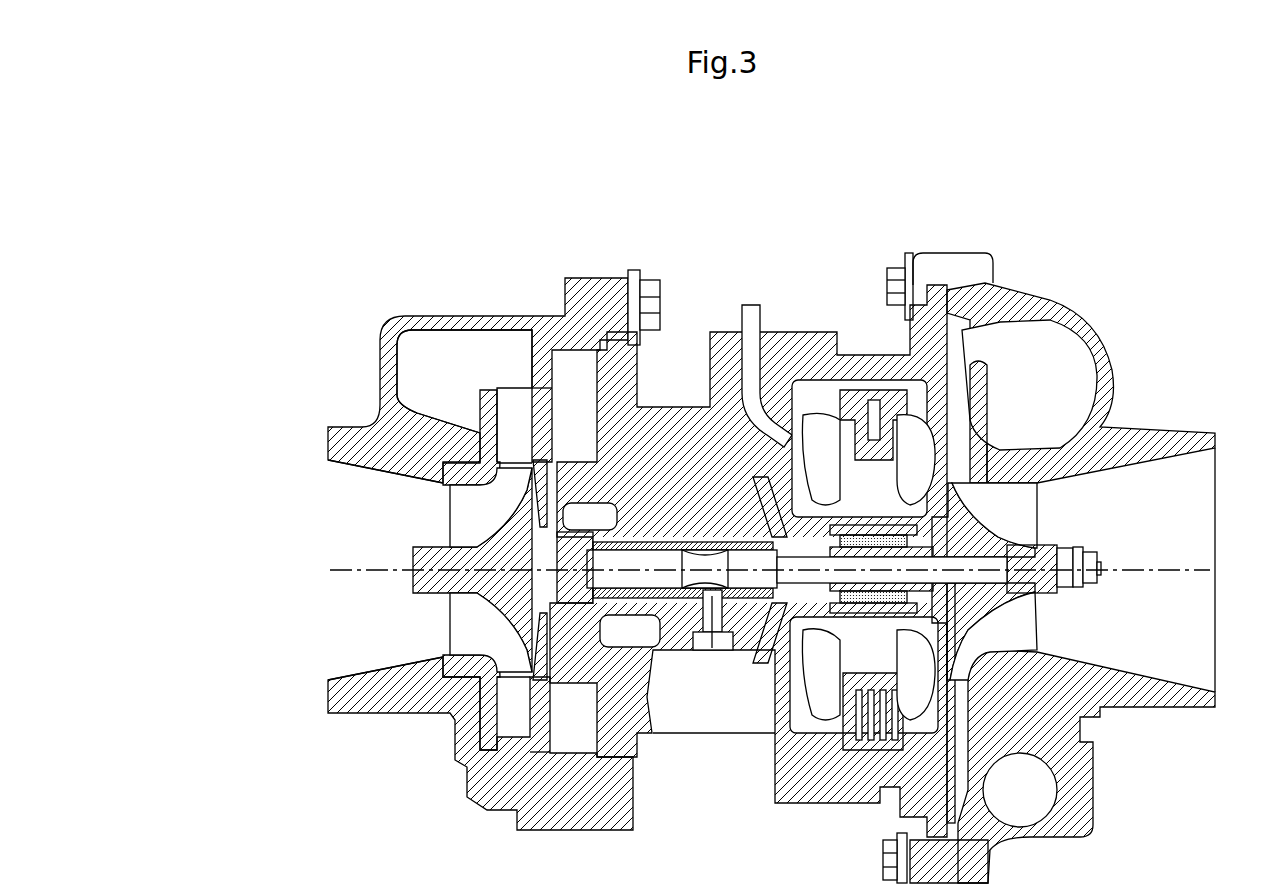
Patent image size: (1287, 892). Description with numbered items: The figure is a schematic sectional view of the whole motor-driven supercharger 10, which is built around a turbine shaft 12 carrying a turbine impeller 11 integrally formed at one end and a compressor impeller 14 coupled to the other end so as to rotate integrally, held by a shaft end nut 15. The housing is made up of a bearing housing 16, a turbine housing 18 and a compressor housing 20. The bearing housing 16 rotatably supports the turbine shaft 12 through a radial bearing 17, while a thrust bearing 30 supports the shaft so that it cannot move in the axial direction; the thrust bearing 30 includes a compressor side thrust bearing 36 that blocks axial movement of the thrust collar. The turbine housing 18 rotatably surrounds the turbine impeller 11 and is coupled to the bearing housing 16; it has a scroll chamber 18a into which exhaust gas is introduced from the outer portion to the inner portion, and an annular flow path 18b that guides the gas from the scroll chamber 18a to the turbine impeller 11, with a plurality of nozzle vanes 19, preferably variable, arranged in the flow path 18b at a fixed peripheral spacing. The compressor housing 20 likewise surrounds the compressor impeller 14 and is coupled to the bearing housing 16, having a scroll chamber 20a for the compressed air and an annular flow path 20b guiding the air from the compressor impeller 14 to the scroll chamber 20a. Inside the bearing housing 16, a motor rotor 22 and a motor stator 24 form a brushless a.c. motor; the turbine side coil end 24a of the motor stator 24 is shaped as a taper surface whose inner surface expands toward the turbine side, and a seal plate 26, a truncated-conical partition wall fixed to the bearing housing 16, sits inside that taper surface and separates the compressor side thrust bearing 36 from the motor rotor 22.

The motor-driven supercharger 10 is at (348, 298).
The turbine impeller 11 is at (450, 575).
The turbine shaft 12 is at (648, 573).
The compressor impeller 14 is at (990, 598).
The shaft end nut 15 is at (1092, 552).
The bearing housing 16 is at (678, 407).
The radial bearing 17 is at (620, 537).
The turbine housing 18 is at (455, 312).
The scroll chamber 18a is at (480, 337).
The flow path 18b is at (478, 433).
The nozzle vanes 19 is at (500, 445).
The compressor housing 20 is at (1100, 320).
The scroll chamber 20a is at (1058, 367).
The flow path 20b is at (962, 412).
The motor rotor 22 is at (845, 620).
The motor stator 24 is at (812, 405).
The turbine side coil end 24a is at (820, 437).
The seal plate 26 is at (770, 660).
The thrust bearing 30 is at (760, 525).
The compressor side thrust bearing 36 is at (778, 600).